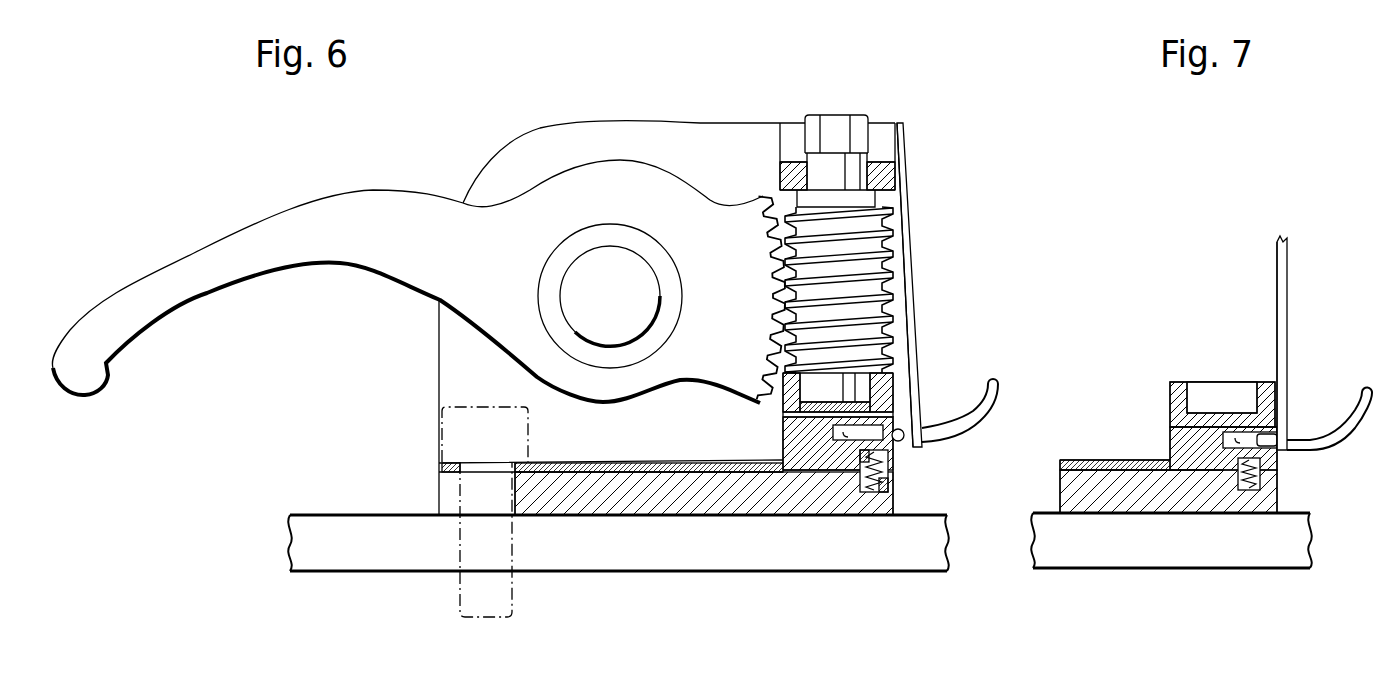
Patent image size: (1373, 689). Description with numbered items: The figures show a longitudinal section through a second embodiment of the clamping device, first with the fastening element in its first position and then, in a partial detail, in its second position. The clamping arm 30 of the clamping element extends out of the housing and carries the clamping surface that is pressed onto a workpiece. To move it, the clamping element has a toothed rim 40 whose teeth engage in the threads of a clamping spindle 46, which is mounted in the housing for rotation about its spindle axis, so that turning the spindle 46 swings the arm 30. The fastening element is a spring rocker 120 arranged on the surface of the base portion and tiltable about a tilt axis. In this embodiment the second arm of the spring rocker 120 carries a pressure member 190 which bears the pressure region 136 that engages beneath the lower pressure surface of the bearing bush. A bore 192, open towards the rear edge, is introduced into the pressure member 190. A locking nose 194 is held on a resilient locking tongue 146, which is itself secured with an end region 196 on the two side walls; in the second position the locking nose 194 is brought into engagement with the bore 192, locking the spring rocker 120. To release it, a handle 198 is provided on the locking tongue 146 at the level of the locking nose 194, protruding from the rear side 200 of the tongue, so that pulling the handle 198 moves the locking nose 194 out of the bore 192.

In FIG. 6, the clamping arm 30 is at (205, 232).
In FIG. 6, the toothed rim 40 is at (748, 215).
In FIG. 6, the clamping spindle 46 is at (893, 218).
In FIG. 6, the spring rocker 120 is at (692, 462).
In FIG. 6, the pressure region 136 is at (783, 418).
In FIG. 6, the locking tongue 146 is at (903, 262).
In FIG. 7, the locking tongue 146 is at (1277, 262).
In FIG. 6, the pressure member 190 is at (803, 453).
In FIG. 7, the pressure member 190 is at (1183, 442).
In FIG. 6, the bore 192 is at (843, 437).
In FIG. 7, the bore 192 is at (1233, 433).
In FIG. 6, the locking nose 194 is at (905, 447).
In FIG. 7, the locking nose 194 is at (1275, 450).
In FIG. 6, the end region 196 is at (897, 150).
In FIG. 6, the handle 198 is at (1003, 380).
In FIG. 7, the handle 198 is at (1357, 397).
In FIG. 6, the rear side 200 is at (915, 302).
In FIG. 7, the rear side 200 is at (1288, 303).